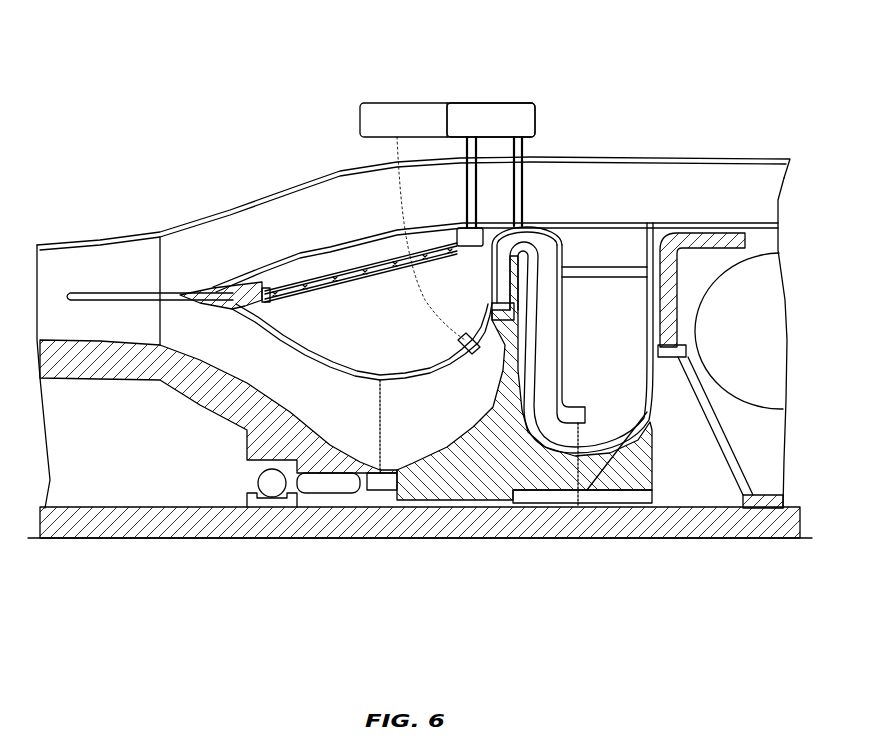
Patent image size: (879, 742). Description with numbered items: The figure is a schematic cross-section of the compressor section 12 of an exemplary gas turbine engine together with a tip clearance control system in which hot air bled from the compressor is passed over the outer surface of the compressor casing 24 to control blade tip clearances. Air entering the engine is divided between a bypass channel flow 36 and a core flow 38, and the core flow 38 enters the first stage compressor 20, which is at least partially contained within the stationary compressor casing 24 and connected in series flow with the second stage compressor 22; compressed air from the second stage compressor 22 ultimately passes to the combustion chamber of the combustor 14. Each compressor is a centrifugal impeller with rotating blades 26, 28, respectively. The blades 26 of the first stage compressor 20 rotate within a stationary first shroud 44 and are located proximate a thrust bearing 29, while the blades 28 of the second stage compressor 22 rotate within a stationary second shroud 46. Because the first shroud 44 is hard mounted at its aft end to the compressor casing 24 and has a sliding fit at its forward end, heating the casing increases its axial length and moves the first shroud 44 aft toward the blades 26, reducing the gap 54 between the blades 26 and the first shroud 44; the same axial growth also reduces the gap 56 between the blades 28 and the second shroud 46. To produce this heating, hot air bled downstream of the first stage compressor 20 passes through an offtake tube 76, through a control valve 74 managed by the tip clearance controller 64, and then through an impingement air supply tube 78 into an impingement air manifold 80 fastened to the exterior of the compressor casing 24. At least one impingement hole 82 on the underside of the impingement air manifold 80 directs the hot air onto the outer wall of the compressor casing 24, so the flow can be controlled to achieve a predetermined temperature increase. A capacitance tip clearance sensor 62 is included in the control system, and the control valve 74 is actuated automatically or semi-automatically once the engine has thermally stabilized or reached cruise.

The compressor section 12 is at (654, 103).
The combustor 14 is at (740, 313).
The first stage compressor 20 is at (443, 482).
The second stage compressor 22 is at (621, 420).
The compressor casing 24 is at (255, 297).
The blades 26 is at (490, 387).
The blades 28 is at (650, 403).
The thrust bearing 29 is at (272, 487).
The bypass channel flow 36 is at (342, 187).
The core flow 38 is at (253, 377).
The first shroud 44 is at (483, 330).
The second shroud 46 is at (630, 397).
The gap 54 is at (463, 373).
The gap 56 is at (648, 405).
The capacitance tip clearance sensor 62 is at (456, 342).
The tip clearance controller 64 is at (390, 107).
The control valve 74 is at (507, 103).
The offtake tube 76 is at (526, 188).
The impingement air supply tube 78 is at (466, 187).
The impingement air manifold 80 is at (347, 273).
The impingement hole 82 is at (327, 282).